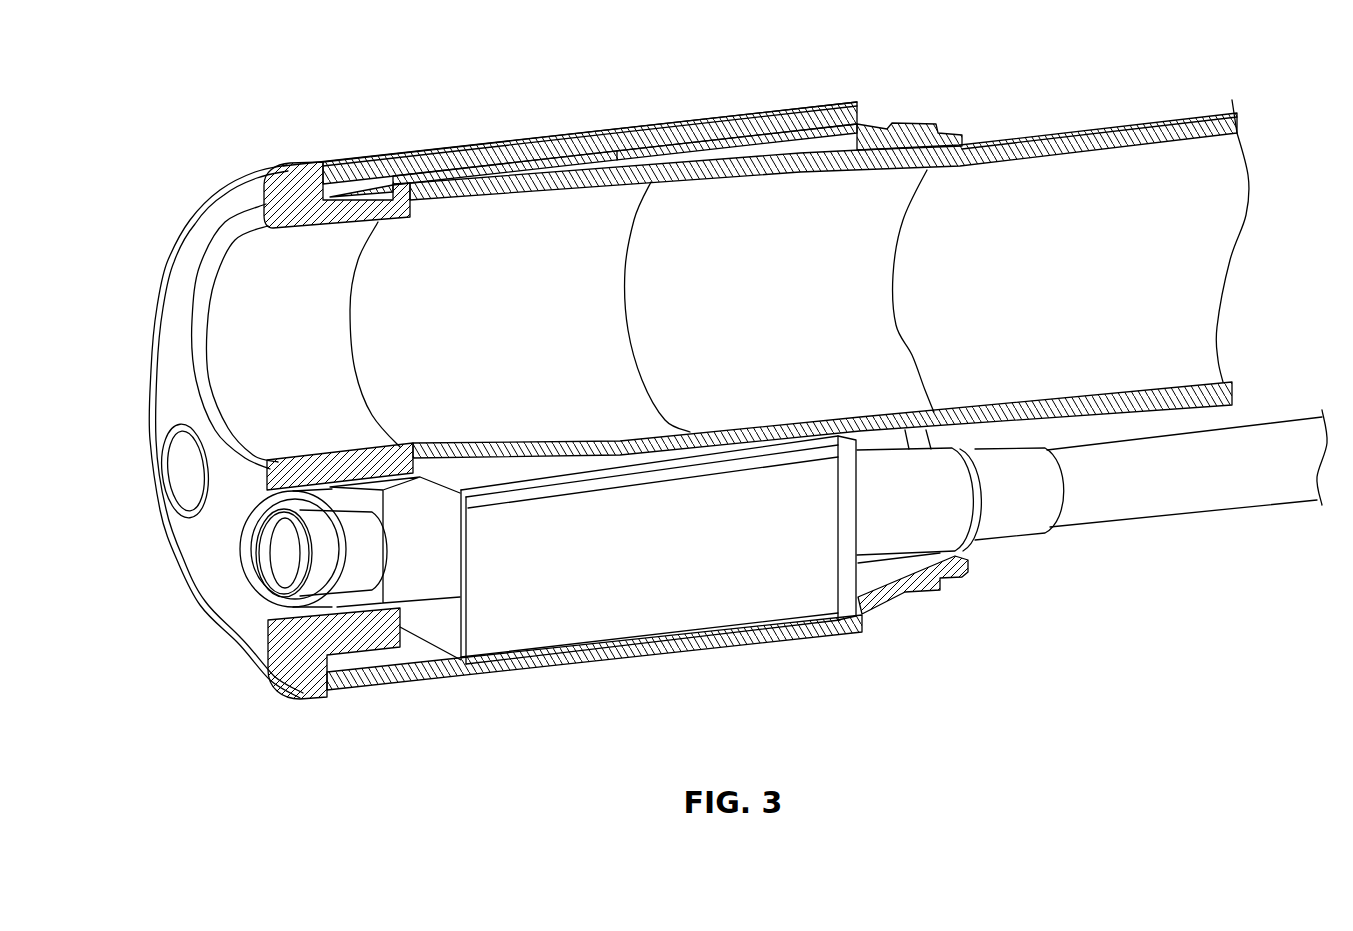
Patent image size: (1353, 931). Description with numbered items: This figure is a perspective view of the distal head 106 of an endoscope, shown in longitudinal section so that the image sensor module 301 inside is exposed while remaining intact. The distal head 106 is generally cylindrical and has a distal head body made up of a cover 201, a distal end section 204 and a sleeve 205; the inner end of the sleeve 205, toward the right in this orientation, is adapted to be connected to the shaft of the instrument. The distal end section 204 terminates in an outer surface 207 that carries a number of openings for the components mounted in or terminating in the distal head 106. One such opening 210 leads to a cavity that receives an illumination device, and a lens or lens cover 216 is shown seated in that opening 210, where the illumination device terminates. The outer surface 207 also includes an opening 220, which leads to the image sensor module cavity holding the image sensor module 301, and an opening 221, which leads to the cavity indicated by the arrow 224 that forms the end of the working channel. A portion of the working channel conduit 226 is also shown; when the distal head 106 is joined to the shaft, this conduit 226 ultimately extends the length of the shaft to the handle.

The distal head 106 is at (370, 86).
The cover 201 is at (640, 140).
The distal end section 204 is at (233, 197).
The sleeve 205 is at (773, 140).
The outer surface 207 is at (170, 403).
The opening 210 is at (167, 440).
The lens or lens cover 216 is at (182, 473).
The opening 220 is at (247, 580).
The opening 221 is at (207, 345).
The cavity 224 is at (230, 296).
The working channel conduit 226 is at (1127, 137).
The image sensor module 301 is at (640, 533).